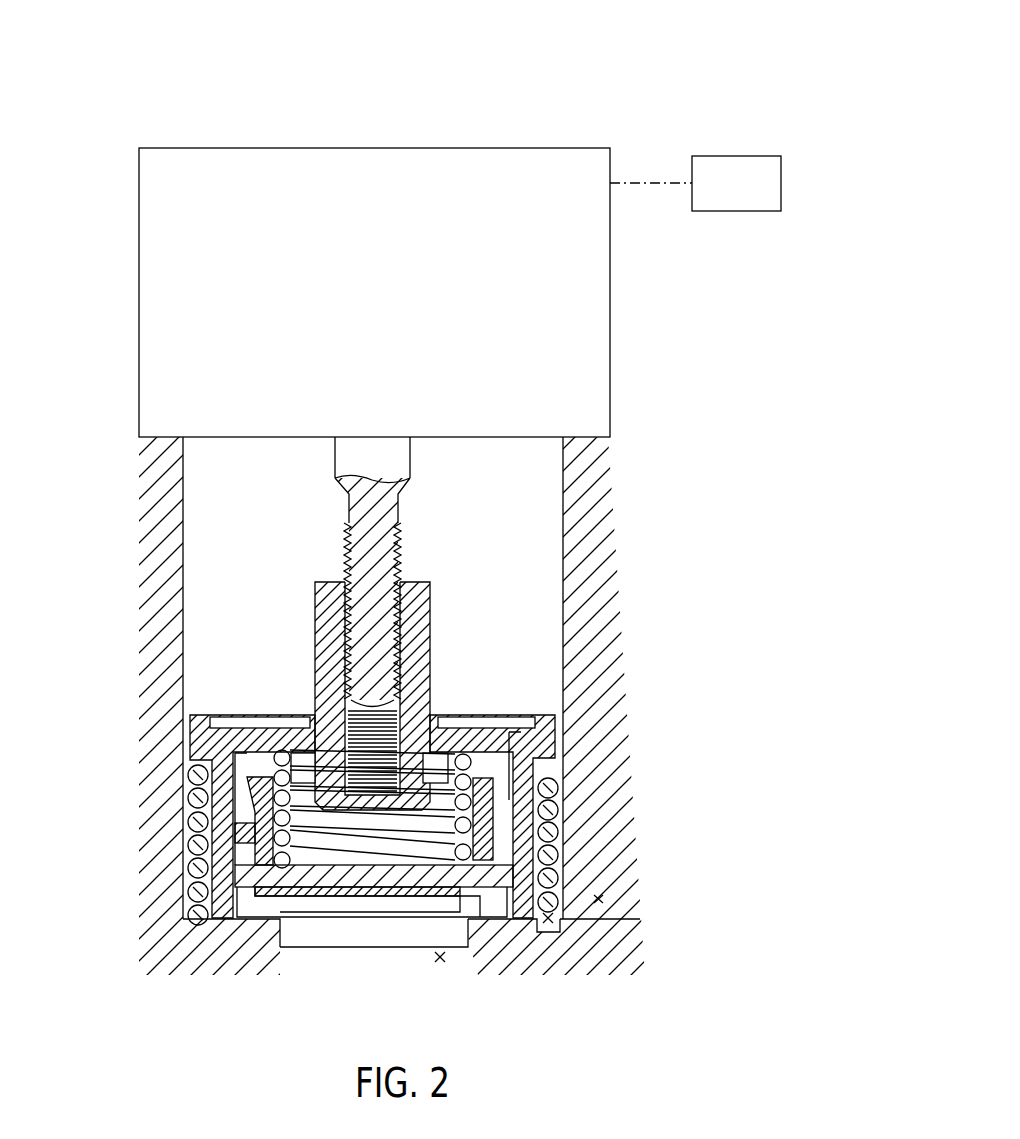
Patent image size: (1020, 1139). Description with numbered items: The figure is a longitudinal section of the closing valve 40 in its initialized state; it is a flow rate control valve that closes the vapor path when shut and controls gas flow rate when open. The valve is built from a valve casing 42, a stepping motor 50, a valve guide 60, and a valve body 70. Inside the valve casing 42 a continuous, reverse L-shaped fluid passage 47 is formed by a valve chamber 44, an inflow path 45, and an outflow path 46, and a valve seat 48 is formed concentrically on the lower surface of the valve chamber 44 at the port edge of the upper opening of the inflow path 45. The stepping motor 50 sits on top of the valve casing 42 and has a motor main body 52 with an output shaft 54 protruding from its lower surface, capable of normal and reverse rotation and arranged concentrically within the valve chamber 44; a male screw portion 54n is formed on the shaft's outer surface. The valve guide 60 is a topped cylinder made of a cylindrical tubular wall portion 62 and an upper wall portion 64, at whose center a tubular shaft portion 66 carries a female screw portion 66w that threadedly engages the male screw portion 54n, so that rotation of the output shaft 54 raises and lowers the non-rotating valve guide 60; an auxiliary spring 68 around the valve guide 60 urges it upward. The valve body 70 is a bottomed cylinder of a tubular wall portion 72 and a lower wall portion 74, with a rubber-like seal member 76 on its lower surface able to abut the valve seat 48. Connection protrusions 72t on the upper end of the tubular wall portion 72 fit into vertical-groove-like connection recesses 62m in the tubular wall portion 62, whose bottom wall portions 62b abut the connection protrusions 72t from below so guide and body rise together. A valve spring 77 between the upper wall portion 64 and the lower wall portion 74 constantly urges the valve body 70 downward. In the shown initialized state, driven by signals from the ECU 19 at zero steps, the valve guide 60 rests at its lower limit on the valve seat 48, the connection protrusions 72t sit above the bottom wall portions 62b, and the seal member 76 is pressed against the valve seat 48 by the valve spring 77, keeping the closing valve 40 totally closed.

The closing valve 40 is at (581, 78).
The stepping motor 50 is at (243, 137).
The motor main body 52 is at (167, 255).
The ECU 19 is at (702, 155).
The valve casing 42 is at (612, 598).
The valve chamber 44 is at (548, 538).
The inflow path 45 is at (440, 960).
The outflow path 46 is at (600, 899).
The fluid passage 47 is at (552, 942).
The valve seat 48 is at (247, 927).
The output shaft 54 is at (398, 460).
The male screw portion 54n is at (342, 540).
The tubular shaft portion 66 is at (420, 592).
The female screw portion 66w is at (345, 580).
The valve guide 60 is at (289, 703).
The tubular wall portion 62 is at (188, 870).
The connection recesses 62m is at (248, 758).
The bottom wall portions 62b is at (233, 815).
The upper wall portion 64 is at (475, 748).
The auxiliary spring 68 is at (190, 774).
The valve body 70 is at (244, 849).
The tubular wall portion 72 is at (505, 855).
The connection protrusions 72t is at (200, 752).
The lower wall portion 74 is at (305, 876).
The seal member 76 is at (409, 908).
The valve spring 77 is at (348, 845).